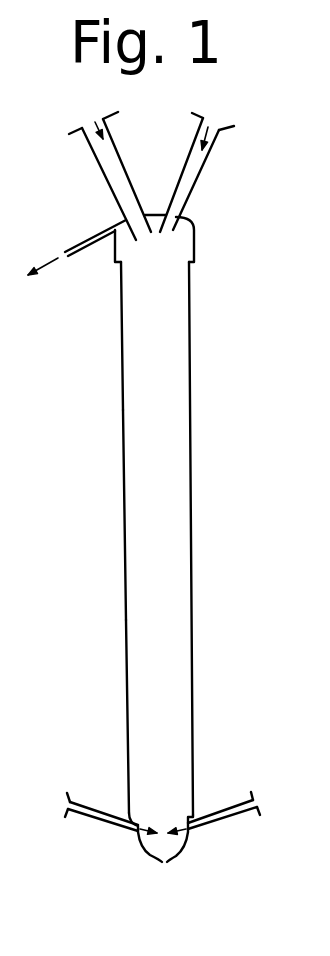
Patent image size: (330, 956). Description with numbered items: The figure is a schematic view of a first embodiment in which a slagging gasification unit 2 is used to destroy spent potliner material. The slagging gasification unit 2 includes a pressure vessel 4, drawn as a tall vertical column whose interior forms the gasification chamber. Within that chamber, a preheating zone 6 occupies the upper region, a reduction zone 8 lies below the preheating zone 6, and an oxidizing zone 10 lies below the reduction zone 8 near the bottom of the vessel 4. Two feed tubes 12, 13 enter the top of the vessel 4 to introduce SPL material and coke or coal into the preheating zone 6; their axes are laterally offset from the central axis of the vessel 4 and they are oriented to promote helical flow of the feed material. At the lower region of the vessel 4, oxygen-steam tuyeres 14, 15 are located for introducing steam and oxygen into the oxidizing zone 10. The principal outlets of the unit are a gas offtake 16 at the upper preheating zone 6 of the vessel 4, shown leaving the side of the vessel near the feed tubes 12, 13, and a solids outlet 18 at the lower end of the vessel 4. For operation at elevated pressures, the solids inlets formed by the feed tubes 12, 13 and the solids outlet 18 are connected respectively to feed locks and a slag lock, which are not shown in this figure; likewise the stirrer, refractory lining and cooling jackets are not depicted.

The slagging gasification unit 2 is at (223, 303).
The pressure vessel 4 is at (193, 350).
The preheating zone 6 is at (145, 330).
The reduction zone 8 is at (142, 498).
The oxidizing zone 10 is at (142, 730).
The feed tube 12 is at (108, 183).
The feed tube 13 is at (200, 182).
The oxygen-steam tuyere 14 is at (100, 818).
The oxygen-steam tuyere 15 is at (217, 823).
The gas offtake 16 is at (88, 238).
The solids outlet 18 is at (163, 863).